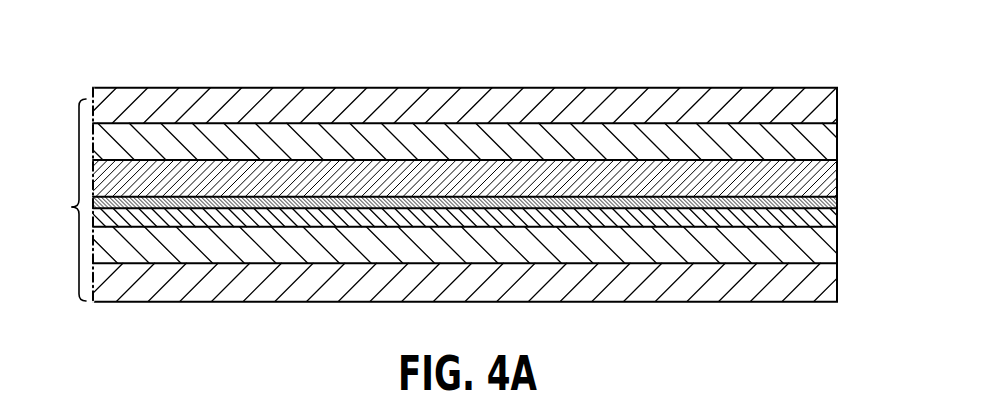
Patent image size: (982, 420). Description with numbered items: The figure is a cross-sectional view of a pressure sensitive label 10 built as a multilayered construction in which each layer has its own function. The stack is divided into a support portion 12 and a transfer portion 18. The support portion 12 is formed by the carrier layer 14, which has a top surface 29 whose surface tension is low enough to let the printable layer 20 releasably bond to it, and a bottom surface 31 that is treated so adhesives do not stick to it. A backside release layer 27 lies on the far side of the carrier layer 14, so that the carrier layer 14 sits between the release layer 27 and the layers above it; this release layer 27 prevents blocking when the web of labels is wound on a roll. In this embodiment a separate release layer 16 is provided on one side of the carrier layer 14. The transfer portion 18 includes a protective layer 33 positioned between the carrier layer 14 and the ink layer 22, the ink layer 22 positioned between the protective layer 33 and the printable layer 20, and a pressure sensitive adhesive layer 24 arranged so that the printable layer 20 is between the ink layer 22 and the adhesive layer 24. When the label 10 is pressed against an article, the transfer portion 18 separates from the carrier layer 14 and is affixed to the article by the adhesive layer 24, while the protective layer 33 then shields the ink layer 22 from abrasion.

The pressure sensitive label 10 is at (639, 83).
The support portion 12 is at (78, 253).
The carrier layer 14 is at (828, 252).
The release layer 16 is at (828, 215).
The transfer portion 18 is at (78, 152).
The printable layer 20 is at (828, 143).
The ink layer 22 is at (828, 182).
The pressure sensitive adhesive layer 24 is at (828, 105).
The backside release layer 27 is at (828, 287).
The top surface 29 is at (749, 227).
The bottom surface 31 is at (713, 264).
The protective layer 33 is at (790, 205).